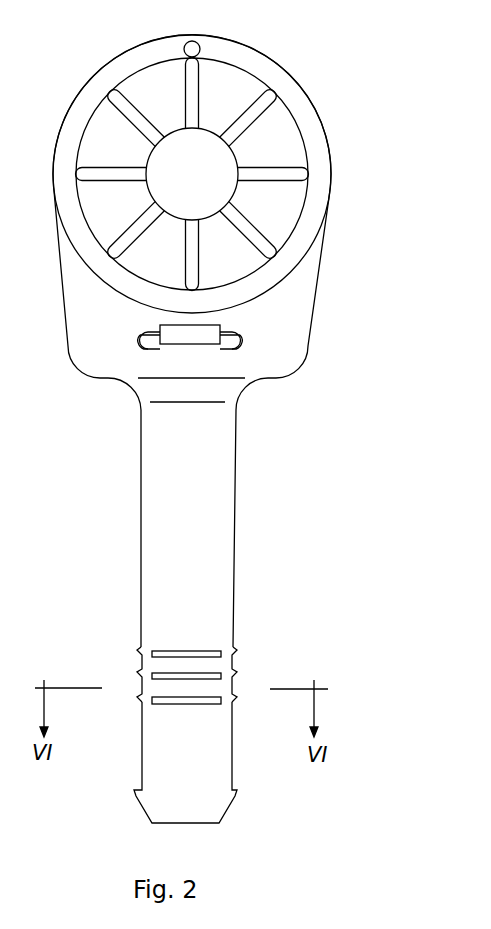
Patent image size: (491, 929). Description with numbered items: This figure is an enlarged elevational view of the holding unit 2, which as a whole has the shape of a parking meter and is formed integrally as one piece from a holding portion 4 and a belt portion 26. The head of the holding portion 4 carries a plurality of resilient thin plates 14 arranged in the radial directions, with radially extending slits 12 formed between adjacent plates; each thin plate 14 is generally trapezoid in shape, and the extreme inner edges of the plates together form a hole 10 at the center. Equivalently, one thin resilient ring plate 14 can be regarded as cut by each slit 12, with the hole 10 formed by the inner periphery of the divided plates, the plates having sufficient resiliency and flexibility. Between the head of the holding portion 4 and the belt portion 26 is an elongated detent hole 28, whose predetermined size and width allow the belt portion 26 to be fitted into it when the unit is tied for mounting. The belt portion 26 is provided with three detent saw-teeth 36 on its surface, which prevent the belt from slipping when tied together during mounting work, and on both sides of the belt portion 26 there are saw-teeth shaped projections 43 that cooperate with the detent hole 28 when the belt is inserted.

The holding unit 2 is at (333, 403).
The holding portion 4 is at (300, 107).
The hole 10 is at (222, 193).
The slits 12 is at (252, 104).
The resilient thin plates 14 is at (290, 156).
The belt portion 26 is at (222, 548).
The detent hole 28 is at (238, 326).
The detent saw-teeth 36 is at (140, 697).
The saw-teeth shaped projections 43 is at (235, 672).